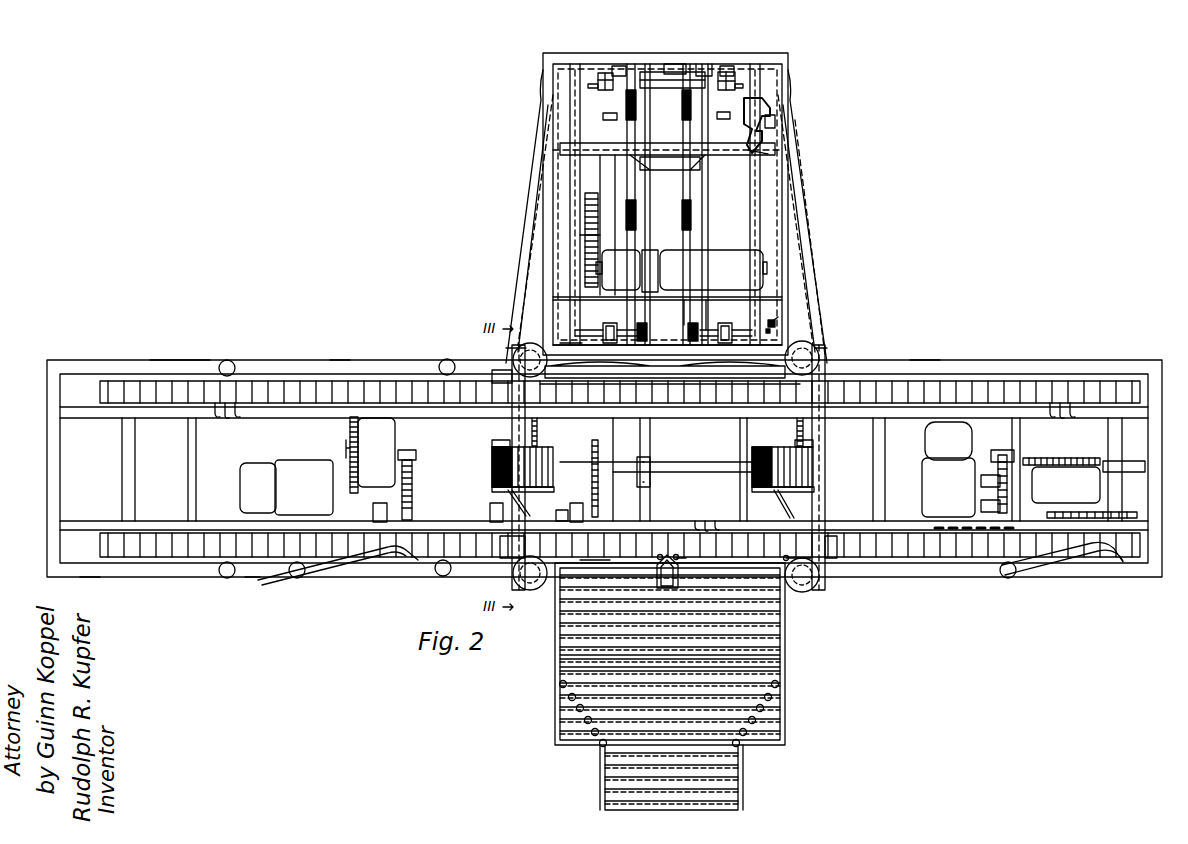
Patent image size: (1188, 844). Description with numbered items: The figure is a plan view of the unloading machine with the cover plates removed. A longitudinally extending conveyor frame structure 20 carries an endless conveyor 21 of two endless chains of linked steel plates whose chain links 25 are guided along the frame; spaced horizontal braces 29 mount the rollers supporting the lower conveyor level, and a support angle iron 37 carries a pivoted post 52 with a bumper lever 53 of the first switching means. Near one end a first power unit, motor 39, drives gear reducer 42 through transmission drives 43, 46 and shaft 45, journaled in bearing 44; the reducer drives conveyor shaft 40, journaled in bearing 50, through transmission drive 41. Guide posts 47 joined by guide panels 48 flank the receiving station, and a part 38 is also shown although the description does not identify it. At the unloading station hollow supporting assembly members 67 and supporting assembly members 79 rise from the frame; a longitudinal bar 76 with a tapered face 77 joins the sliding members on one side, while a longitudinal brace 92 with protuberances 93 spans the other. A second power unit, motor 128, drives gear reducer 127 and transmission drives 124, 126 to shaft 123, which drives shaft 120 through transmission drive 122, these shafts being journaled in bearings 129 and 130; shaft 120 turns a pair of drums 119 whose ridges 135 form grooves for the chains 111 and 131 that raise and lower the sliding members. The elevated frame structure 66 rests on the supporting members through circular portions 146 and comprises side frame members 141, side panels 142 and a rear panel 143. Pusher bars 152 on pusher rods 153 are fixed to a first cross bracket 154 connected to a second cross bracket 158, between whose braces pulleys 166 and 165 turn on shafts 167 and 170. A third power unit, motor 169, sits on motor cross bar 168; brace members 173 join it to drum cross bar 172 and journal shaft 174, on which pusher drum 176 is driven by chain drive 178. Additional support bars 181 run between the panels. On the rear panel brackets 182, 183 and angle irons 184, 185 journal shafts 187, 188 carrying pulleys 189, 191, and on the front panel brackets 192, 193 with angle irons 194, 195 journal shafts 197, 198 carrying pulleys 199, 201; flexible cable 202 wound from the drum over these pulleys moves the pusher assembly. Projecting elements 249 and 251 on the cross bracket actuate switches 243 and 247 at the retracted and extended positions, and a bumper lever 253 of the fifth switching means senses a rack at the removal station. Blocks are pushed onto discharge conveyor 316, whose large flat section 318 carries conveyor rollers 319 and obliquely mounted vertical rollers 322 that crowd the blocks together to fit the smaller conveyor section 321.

The conveyor frame structure 20 is at (180, 360).
The endless conveyor 21 is at (100, 391).
The chain links 25 is at (228, 423).
The horizontal braces 29 is at (188, 478).
The support angle iron 37 is at (927, 359).
The main frame 38 is at (47, 484).
The motor 39 is at (922, 484).
The conveyor shaft 40 is at (1112, 426).
The transmission drive 41 is at (1125, 512).
The gear reducer 42 is at (1100, 478).
The transmission drive 43 is at (981, 506).
The bearing 44 is at (981, 480).
The shaft 45 is at (1007, 491).
The transmission drive 46 is at (1070, 458).
The guide posts 47 is at (229, 359).
The guide panels 48 is at (340, 358).
The bearing 50 is at (1124, 461).
The post 52 is at (297, 578).
The bumper lever 53 is at (344, 573).
The elevated frame structure 66 is at (543, 70).
The hollow supporting assembly members 67 is at (537, 328).
The longitudinal bar 76 is at (722, 388).
The tapered face 77 is at (494, 370).
The supporting assembly members 79 is at (535, 592).
The longitudinal brace 92 is at (627, 538).
The protuberances 93 is at (580, 560).
The chains 111 is at (537, 428).
The drum 119 is at (553, 455).
The shaft 120 is at (570, 493).
The transmission drive 122 is at (600, 449).
The shaft 123 is at (565, 515).
The transmission drive 124 is at (412, 489).
The transmission drive 126 is at (347, 444).
The gear reducer 127 is at (395, 430).
The motor 128 is at (287, 460).
The bearings 129 is at (374, 511).
The bearings 130 is at (650, 470).
The chains 131 is at (533, 489).
The ridges 135 is at (520, 438).
The side frame members 141 is at (526, 273).
The side panels 142 is at (542, 215).
The rear panel 143 is at (750, 57).
The circular portions 146 is at (514, 358).
The pusher bars 152 is at (665, 374).
The pusher rods 153 is at (606, 303).
The first cross bracket 154 is at (610, 200).
The second cross bracket 158 is at (683, 63).
The rotatable pulley 165 is at (691, 102).
The rotatable pulley 166 is at (632, 102).
The shaft 167 is at (604, 117).
The motor cross bar 168 is at (798, 253).
The motor 169 is at (755, 250).
The shaft 170 is at (722, 116).
The drum cross bar 172 is at (545, 154).
The brace members 173 is at (560, 180).
The shaft 174 is at (612, 143).
The pusher drum 176 is at (670, 271).
The chain drive 178 is at (585, 235).
The additional support bars 181 is at (625, 296).
The bracket 182 is at (608, 88).
The bracket 183 is at (735, 88).
The angle iron 184 is at (622, 63).
The angle iron 185 is at (725, 64).
The shaft 187 is at (598, 78).
The shaft 188 is at (735, 73).
The pulley 189 is at (651, 63).
The pulley 191 is at (712, 63).
The bracket 192 is at (603, 324).
The bracket 193 is at (732, 324).
The angle iron 194 is at (603, 341).
The angle iron 195 is at (710, 309).
The shaft 197 is at (603, 334).
The shaft 198 is at (732, 339).
The pulley 199 is at (647, 325).
The pulley 201 is at (683, 325).
The flexible cable 202 is at (686, 308).
The switch 243 is at (777, 119).
The switch 247 is at (783, 317).
The projecting element 249 is at (758, 100).
The projecting element 251 is at (768, 154).
The bumper lever 253 is at (1116, 560).
The discharge conveyor 316 is at (785, 670).
The large flat section 318 is at (780, 638).
The conveyor rollers 319 is at (558, 662).
The smaller conveyor section 321 is at (746, 799).
The vertical rollers 322 is at (578, 708).